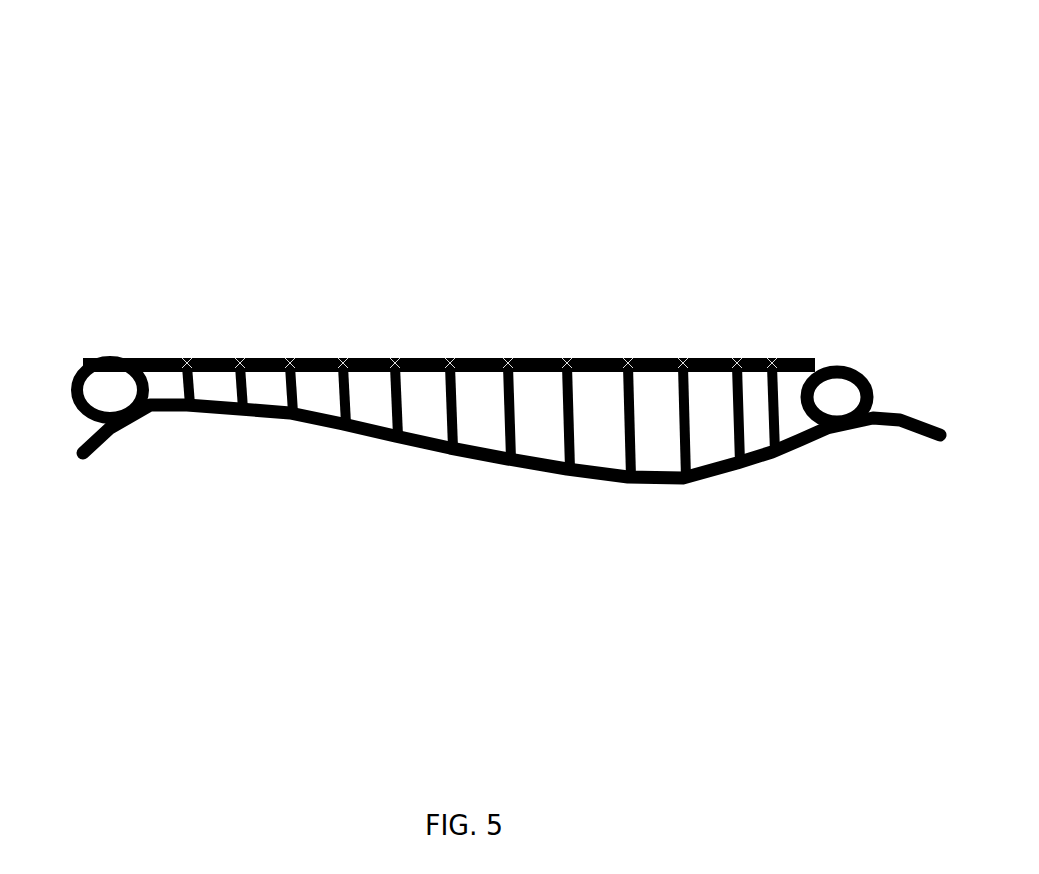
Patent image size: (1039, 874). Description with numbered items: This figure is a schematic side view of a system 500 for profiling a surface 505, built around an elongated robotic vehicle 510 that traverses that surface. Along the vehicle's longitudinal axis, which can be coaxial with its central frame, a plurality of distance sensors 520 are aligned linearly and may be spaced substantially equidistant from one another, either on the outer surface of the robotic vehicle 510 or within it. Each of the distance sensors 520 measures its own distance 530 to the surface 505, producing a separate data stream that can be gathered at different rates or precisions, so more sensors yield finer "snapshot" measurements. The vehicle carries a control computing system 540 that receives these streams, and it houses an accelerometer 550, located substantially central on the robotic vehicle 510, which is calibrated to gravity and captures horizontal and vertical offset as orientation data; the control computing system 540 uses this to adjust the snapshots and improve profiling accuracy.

The system 500 is at (127, 160).
The surface 505 is at (812, 435).
The robotic vehicle 510 is at (810, 360).
The distance sensors 520 is at (283, 357).
The distance 530 is at (292, 390).
The control computing system 540 is at (475, 362).
The accelerometer 550 is at (423, 362).